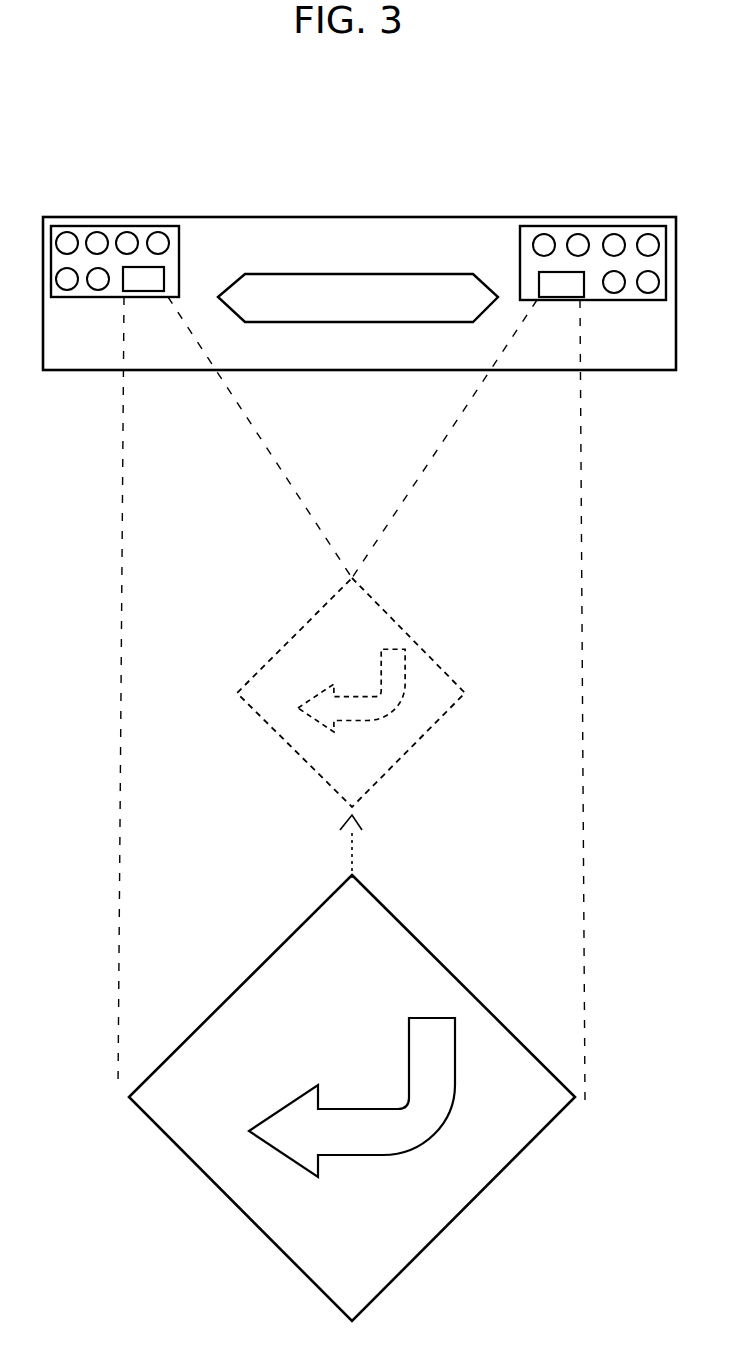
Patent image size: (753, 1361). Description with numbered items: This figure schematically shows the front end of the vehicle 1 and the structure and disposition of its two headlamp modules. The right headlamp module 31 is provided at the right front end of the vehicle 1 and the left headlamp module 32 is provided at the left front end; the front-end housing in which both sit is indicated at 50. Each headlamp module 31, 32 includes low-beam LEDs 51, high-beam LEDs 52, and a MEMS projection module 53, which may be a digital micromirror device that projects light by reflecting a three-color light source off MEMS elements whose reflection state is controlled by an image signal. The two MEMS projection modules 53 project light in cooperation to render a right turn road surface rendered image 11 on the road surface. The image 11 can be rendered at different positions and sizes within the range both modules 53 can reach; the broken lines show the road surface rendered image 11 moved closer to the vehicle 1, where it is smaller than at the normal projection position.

The vehicle 1 is at (404, 172).
The housing 50 is at (342, 217).
The right headlamp module 31 is at (116, 226).
The left headlamp module 32 is at (577, 226).
The low-beam LEDs 51 is at (62, 297).
The high-beam LEDs 52 is at (70, 233).
The MEMS projection module 53 is at (163, 277).
The road surface rendered image 11 is at (323, 777).